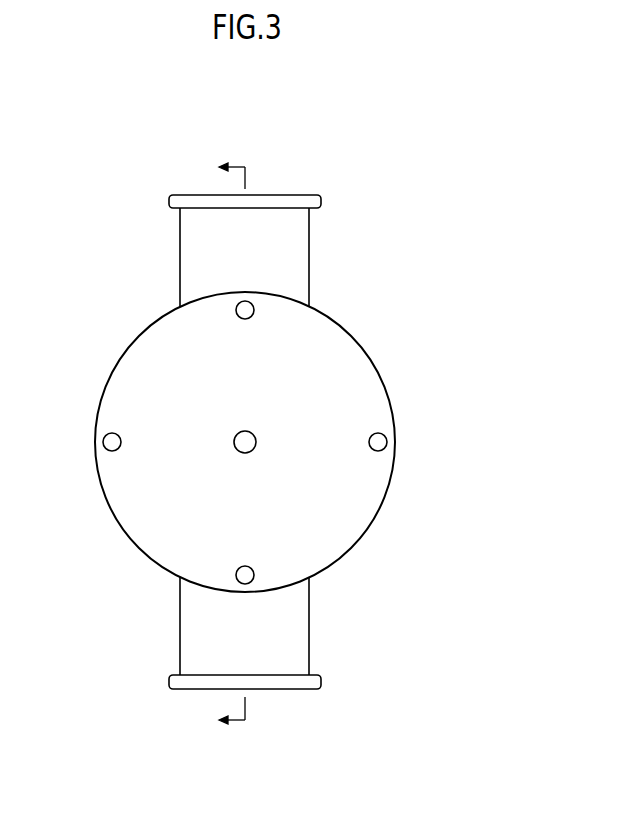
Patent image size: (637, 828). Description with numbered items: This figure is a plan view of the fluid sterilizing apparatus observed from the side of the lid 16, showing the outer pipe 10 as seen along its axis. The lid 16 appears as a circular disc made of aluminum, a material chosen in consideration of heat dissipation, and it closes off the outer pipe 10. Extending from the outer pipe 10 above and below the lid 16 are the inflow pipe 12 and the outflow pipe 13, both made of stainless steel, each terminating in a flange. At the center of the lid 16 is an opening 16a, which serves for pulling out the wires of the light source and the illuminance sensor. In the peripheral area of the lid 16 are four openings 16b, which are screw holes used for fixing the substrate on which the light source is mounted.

The outer pipe 10 is at (452, 206).
The inflow pipe 12 is at (290, 686).
The outflow pipe 13 is at (281, 198).
The lid 16 is at (388, 490).
The opening 16a is at (256, 434).
The openings 16b is at (254, 306).